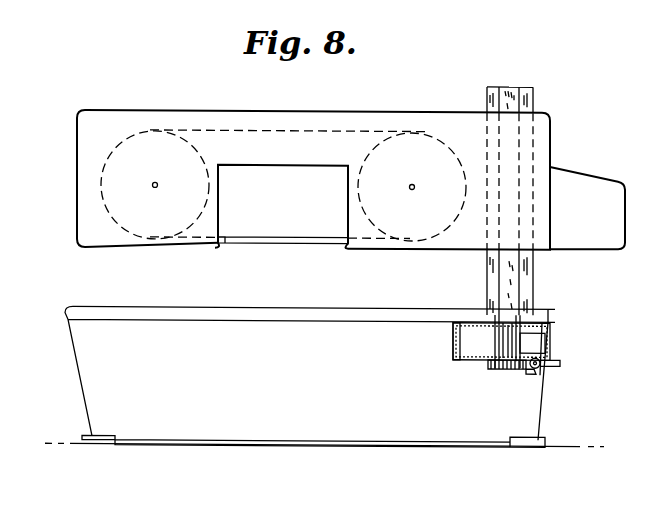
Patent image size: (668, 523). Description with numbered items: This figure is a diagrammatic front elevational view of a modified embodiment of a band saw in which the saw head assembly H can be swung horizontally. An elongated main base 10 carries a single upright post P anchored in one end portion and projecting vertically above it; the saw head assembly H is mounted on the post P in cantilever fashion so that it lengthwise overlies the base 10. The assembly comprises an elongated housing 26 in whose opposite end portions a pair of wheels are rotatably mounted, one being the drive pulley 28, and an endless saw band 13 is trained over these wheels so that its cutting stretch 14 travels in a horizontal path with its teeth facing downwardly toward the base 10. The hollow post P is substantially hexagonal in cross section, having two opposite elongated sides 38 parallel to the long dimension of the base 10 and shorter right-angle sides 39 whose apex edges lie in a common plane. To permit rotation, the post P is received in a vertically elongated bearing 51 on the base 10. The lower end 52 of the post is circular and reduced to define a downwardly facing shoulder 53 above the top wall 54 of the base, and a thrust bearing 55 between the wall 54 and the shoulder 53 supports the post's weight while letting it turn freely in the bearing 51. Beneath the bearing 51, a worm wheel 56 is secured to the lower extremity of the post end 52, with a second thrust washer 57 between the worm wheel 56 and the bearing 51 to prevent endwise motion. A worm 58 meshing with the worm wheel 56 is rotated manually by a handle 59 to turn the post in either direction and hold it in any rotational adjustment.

The saw head assembly H is at (79, 131).
The post P is at (533, 97).
The main base 10 is at (310, 455).
The endless saw band 13 is at (248, 129).
The cutting stretch 14 is at (265, 246).
The housing 26 is at (101, 184).
The drive pulley 28 is at (426, 130).
The elongated sides of post 38 is at (505, 98).
The shorter sides of post 39 is at (492, 107).
The bearing 51 is at (522, 341).
The lower end of post 52 is at (498, 339).
The shoulder 53 is at (503, 317).
The top wall of base 54 is at (460, 321).
The thrust bearing 55 is at (541, 340).
The worm wheel 56 is at (520, 364).
The second thrust washer 57 is at (489, 358).
The worm 58 is at (541, 362).
The handle 59 is at (556, 364).